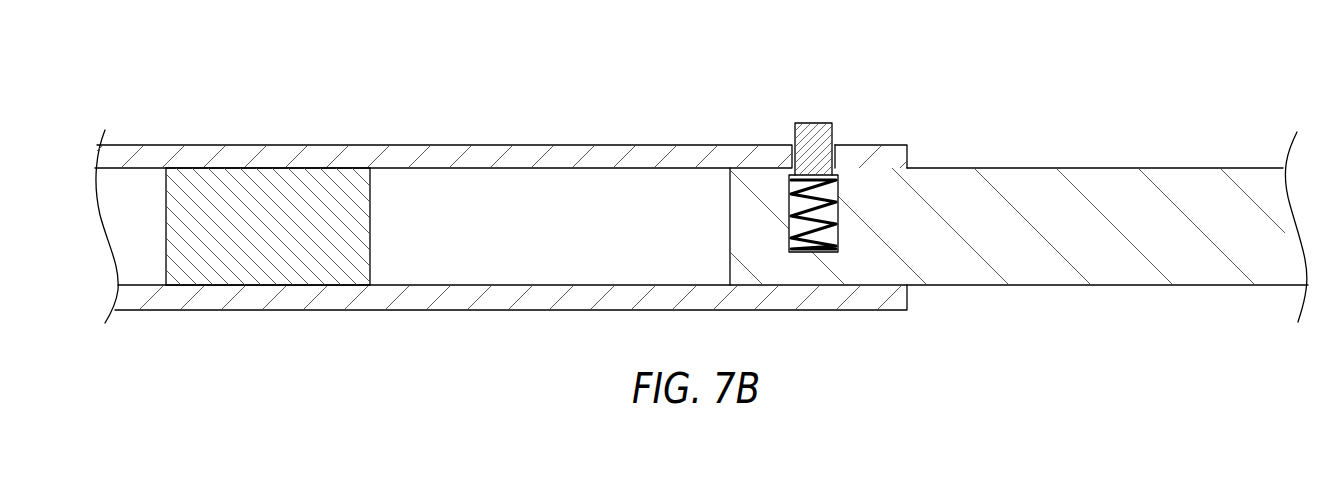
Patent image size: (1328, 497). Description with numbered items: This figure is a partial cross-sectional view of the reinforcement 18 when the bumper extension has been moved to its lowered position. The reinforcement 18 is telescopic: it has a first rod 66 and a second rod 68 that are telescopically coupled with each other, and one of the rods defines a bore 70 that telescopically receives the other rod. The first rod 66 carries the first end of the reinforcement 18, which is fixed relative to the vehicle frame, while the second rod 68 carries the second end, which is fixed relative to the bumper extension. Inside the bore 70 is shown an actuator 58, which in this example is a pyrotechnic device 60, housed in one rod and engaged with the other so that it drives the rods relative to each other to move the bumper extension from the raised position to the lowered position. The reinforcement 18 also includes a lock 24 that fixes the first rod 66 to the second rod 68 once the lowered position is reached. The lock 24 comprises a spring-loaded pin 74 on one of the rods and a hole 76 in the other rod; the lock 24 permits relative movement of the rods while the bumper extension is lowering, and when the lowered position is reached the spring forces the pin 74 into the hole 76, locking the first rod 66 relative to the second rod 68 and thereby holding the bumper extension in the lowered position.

The reinforcement 18 is at (913, 77).
The lock 24 is at (772, 197).
The actuator 58 is at (244, 195).
The pyrotechnic device 60 is at (258, 226).
The first rod 66 is at (572, 147).
The second rod 68 is at (992, 203).
The bore 70 is at (145, 172).
The spring-loaded pin 74 is at (815, 140).
The hole 76 is at (793, 162).